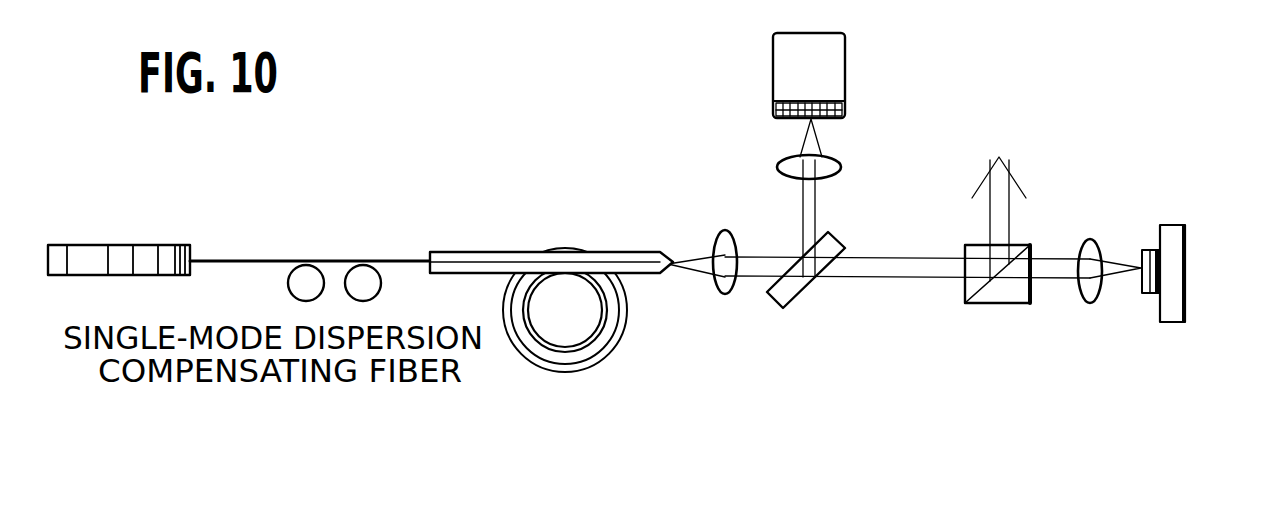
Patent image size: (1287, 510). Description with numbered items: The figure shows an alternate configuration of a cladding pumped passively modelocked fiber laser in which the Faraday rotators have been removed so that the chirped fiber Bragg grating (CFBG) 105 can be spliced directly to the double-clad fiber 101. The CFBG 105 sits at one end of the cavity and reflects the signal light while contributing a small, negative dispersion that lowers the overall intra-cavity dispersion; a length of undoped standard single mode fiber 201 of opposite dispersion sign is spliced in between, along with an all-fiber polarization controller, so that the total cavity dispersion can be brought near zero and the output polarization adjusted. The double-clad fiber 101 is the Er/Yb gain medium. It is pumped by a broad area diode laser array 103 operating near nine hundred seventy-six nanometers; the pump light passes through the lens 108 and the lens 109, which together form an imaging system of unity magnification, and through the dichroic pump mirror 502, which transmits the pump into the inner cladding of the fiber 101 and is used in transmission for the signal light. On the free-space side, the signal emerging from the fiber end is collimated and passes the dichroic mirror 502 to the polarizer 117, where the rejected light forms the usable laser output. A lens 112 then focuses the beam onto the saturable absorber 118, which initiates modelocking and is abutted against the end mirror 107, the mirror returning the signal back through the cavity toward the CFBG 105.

The chirped fiber Bragg grating (CFBG) 105 is at (142, 245).
The single mode fiber 201 is at (370, 298).
The double-clad fiber 101 is at (512, 251).
The lens 109 is at (733, 229).
The dichroic pump mirror 502 is at (793, 302).
The lens 108 is at (782, 171).
The diode laser array 103 is at (845, 73).
The polarizer 117 is at (1012, 304).
The lens 112 is at (1088, 303).
The saturable absorber 118 is at (1143, 250).
The mirror 107 is at (1174, 225).